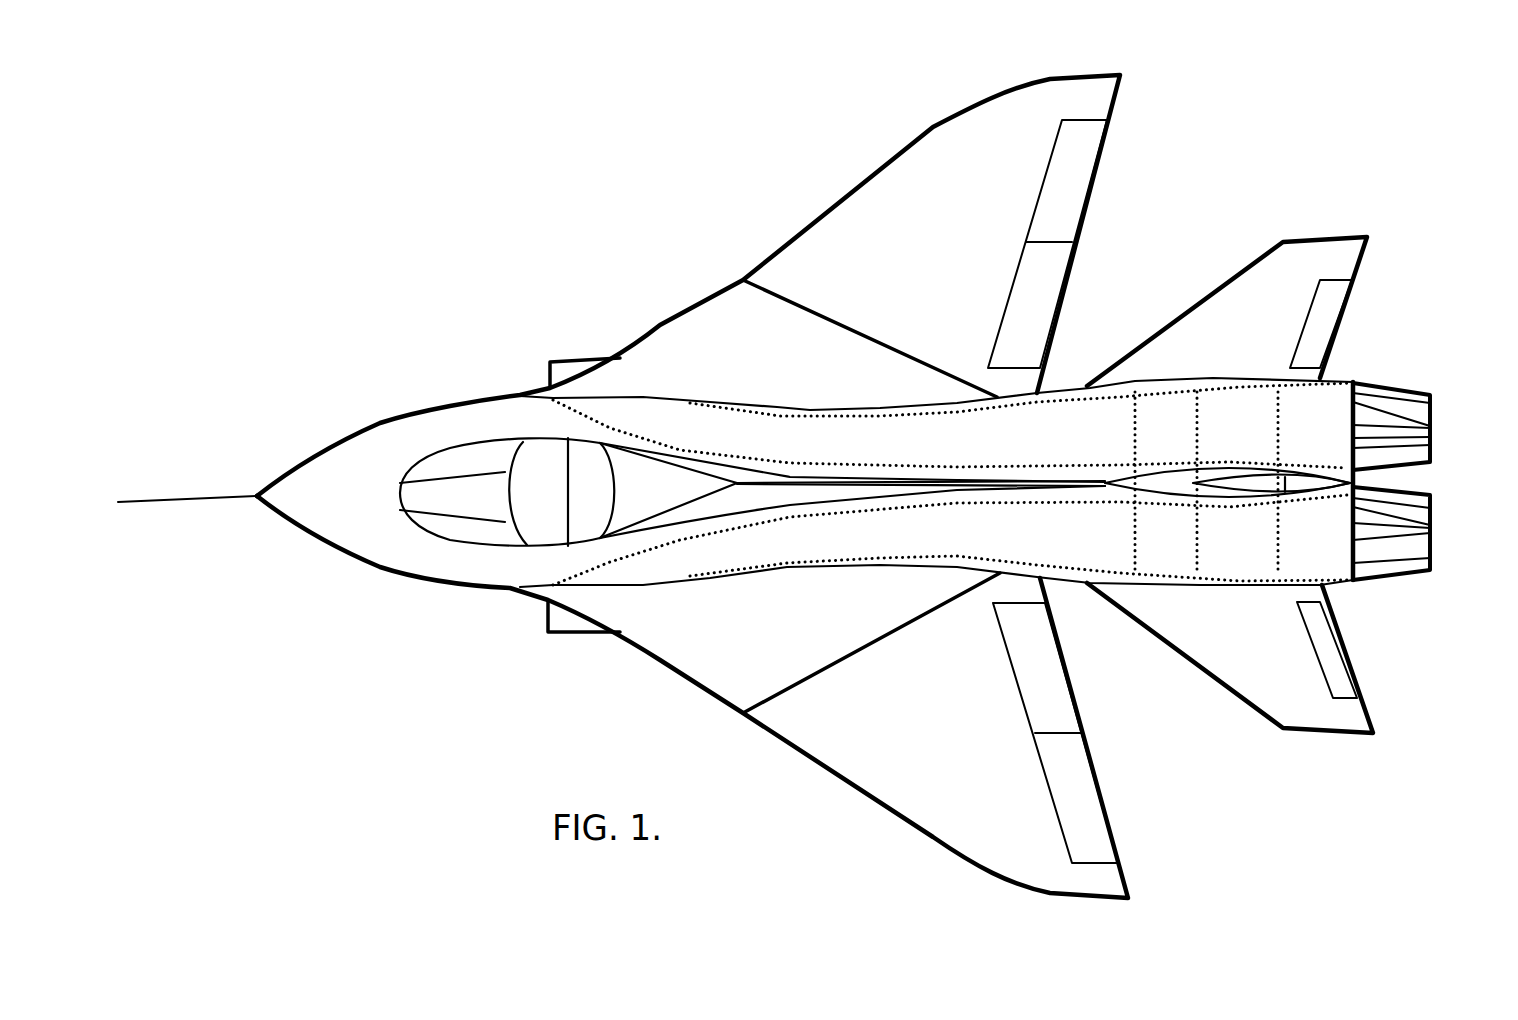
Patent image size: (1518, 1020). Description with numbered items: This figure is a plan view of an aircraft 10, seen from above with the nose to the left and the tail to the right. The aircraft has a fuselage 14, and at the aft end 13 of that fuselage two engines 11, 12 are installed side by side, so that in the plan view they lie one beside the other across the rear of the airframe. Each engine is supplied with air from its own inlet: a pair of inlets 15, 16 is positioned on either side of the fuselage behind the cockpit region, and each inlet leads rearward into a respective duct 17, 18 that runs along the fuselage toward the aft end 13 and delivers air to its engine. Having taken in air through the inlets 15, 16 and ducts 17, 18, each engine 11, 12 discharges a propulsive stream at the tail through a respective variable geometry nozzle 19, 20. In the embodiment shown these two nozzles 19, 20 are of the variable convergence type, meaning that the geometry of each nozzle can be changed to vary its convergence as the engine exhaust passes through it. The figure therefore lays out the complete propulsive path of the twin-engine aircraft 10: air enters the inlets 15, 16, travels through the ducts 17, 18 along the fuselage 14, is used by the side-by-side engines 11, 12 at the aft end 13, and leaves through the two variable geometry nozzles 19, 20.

The aircraft 10 is at (420, 410).
The engine 11 is at (1143, 380).
The engine 12 is at (1163, 587).
The aft end 13 is at (1333, 587).
The fuselage 14 is at (457, 588).
The inlet 15 is at (548, 378).
The inlet 16 is at (547, 618).
The duct 17 is at (777, 410).
The duct 18 is at (787, 567).
The variable geometry nozzle 19 is at (1433, 422).
The variable geometry nozzle 20 is at (1435, 542).